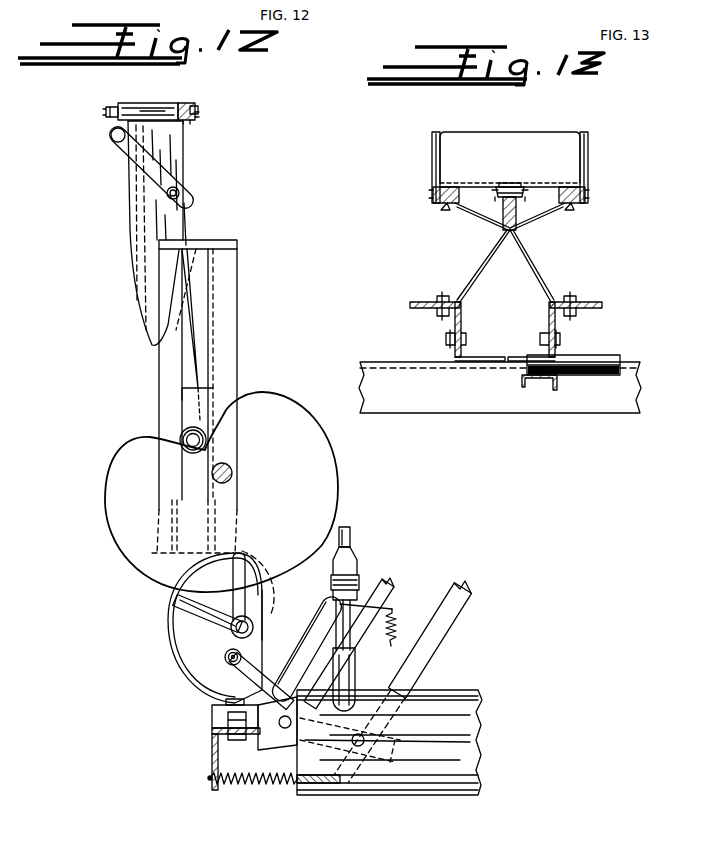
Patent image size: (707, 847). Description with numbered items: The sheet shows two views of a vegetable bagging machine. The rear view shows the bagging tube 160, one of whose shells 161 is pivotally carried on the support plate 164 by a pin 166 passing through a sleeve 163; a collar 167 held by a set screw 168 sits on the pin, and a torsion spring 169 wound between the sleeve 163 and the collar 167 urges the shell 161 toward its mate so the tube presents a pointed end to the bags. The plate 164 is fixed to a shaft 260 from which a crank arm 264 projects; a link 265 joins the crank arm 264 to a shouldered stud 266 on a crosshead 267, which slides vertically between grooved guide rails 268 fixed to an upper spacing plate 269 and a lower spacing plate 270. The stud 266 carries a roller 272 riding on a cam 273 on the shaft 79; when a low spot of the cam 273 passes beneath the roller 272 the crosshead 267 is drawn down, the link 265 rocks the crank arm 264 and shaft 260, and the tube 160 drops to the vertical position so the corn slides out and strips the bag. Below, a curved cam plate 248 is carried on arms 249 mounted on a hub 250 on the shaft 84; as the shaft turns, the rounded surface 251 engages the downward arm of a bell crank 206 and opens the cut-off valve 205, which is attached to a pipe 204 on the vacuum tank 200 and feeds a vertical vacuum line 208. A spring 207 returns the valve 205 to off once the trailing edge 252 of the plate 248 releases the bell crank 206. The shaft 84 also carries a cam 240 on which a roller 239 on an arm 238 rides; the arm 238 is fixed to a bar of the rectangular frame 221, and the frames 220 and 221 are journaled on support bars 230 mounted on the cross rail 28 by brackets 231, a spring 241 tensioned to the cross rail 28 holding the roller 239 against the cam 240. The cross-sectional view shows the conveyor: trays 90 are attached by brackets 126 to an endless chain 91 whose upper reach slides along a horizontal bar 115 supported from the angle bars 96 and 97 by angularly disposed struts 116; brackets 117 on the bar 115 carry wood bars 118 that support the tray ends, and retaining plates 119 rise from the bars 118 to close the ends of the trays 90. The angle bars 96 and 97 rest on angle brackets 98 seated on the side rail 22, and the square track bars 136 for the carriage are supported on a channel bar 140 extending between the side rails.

In FIG. 12, the bagging tube 160 is at (122, 198).
In FIG. 12, the shell 161 is at (142, 242).
In FIG. 12, the sleeve 163 is at (160, 103).
In FIG. 12, the support plate 164 is at (116, 103).
In FIG. 12, the pin 166 is at (198, 115).
In FIG. 12, the collar 167 is at (189, 121).
In FIG. 12, the set screw 168 is at (197, 107).
In FIG. 12, the torsion spring 169 is at (184, 103).
In FIG. 12, the shaft 260 is at (111, 133).
In FIG. 12, the crank arm 264 is at (146, 161).
In FIG. 12, the link 265 is at (186, 236).
In FIG. 12, the spacing plate 269 is at (232, 243).
In FIG. 12, the grooved guide rails 268 is at (170, 360).
In FIG. 12, the crosshead 267 is at (205, 390).
In FIG. 12, the roller 272 is at (182, 432).
In FIG. 12, the shouldered stud 266 is at (200, 440).
In FIG. 12, the shaft 79 is at (232, 473).
In FIG. 12, the cam 273 is at (338, 478).
In FIG. 12, the spacing plate 270 is at (157, 556).
In FIG. 12, the curved cam plate 248 is at (171, 660).
In FIG. 12, the rounded surface 251 is at (239, 556).
In FIG. 12, the arms 249 is at (185, 598).
In FIG. 12, the hub 250 is at (226, 633).
In FIG. 12, the cam 240 is at (264, 592).
In FIG. 12, the shaft 84 is at (250, 627).
In FIG. 12, the roller 239 is at (242, 657).
In FIG. 12, the arm 238 is at (248, 679).
In FIG. 12, the cut-off valve 205 is at (325, 611).
In FIG. 12, the bell crank 206 is at (318, 630).
In FIG. 12, the frame 221 is at (391, 586).
In FIG. 12, the frame 220 is at (447, 641).
In FIG. 12, the vacuum line 208 is at (351, 536).
In FIG. 12, the pipe 204 is at (350, 673).
In FIG. 12, the spring 207 is at (392, 641).
In FIG. 12, the vacuum tank 200 is at (478, 735).
In FIG. 12, the support bars 230 is at (273, 728).
In FIG. 12, the brackets 231 is at (212, 722).
In FIG. 12, the trailing edge 252 is at (228, 703).
In FIG. 12, the cross rail 28 is at (212, 745).
In FIG. 12, the spring 241 is at (252, 786).
In FIG. 13, the trays 90 is at (540, 140).
In FIG. 13, the retaining plates 119 is at (432, 157).
In FIG. 13, the wood bars 118 is at (445, 188).
In FIG. 13, the endless chain 91 is at (502, 186).
In FIG. 13, the bracket 126 is at (522, 192).
In FIG. 13, the horizontal bar 115 is at (517, 222).
In FIG. 13, the brackets 117 is at (478, 213).
In FIG. 13, the struts 116 is at (528, 266).
In FIG. 13, the angle bar 97 is at (410, 305).
In FIG. 13, the angle bar 96 is at (602, 307).
In FIG. 13, the angle brackets 98 is at (547, 325).
In FIG. 13, the bars 136 is at (598, 355).
In FIG. 13, the channel bar 140 is at (522, 383).
In FIG. 13, the rear side rail 22 is at (630, 389).